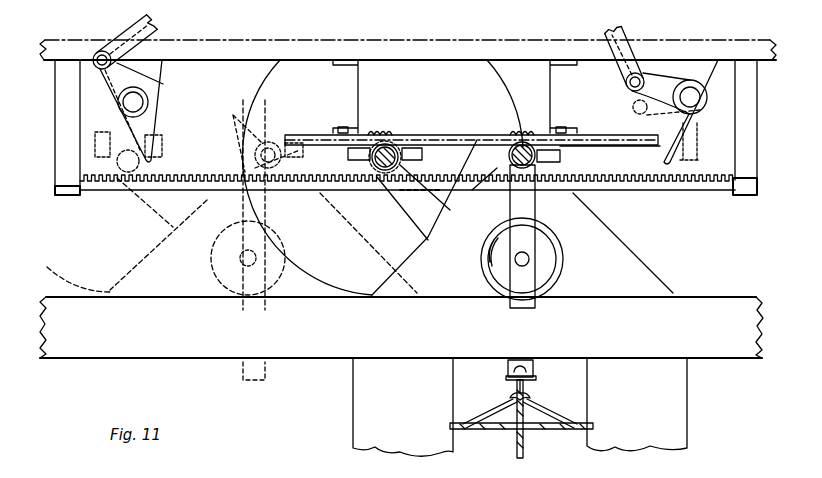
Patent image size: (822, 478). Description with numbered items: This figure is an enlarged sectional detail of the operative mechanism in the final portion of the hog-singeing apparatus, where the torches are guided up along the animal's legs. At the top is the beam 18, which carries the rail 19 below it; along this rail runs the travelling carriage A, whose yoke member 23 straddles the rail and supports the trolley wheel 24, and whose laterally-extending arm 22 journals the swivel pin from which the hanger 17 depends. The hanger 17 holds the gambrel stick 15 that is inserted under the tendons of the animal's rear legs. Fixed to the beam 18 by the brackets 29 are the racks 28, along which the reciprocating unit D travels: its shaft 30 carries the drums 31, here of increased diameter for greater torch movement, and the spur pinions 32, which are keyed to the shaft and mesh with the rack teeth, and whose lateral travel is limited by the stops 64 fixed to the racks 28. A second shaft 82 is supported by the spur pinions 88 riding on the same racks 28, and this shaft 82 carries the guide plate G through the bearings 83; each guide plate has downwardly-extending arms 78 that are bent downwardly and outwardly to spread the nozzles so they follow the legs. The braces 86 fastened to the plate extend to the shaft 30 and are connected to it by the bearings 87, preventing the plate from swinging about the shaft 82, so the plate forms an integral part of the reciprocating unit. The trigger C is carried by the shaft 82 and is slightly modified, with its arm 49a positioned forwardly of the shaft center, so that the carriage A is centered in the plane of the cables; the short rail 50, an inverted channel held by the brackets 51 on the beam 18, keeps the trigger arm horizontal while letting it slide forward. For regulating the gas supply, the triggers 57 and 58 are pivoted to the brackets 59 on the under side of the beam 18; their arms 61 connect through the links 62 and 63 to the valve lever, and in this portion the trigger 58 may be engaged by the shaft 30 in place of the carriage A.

The gambrel stick 15 is at (593, 425).
The hanger 17 is at (560, 410).
The beam 18 is at (408, 40).
The rail 19 is at (401, 327).
The laterally-extending arm 22 is at (534, 380).
The yoke member 23 is at (540, 213).
The trolley wheel 24 is at (555, 258).
The racks 28 is at (622, 187).
The brackets 29 is at (752, 130).
The shaft 30 is at (272, 133).
The drums 31 is at (257, 105).
The spur pinions 32 is at (380, 130).
The arm 49a is at (476, 203).
The short rail 50 is at (598, 135).
The brackets 51 is at (358, 85).
The trigger 57 is at (700, 117).
The trigger 58 is at (143, 125).
The brackets 59 is at (152, 93).
The arms 61 is at (150, 77).
The link 62 is at (620, 33).
The link 63 is at (140, 25).
The stops 64 is at (683, 153).
The downwardly-extending arms 78 is at (520, 407).
The shaft 82 is at (510, 157).
The bearings 83 is at (565, 153).
The braces 86 is at (424, 217).
The bearings 87 is at (373, 180).
The spur pinions 88 is at (518, 133).
The travelling carriage A is at (543, 298).
The trigger C is at (483, 157).
The reciprocating unit D is at (382, 177).
The guide plate G is at (652, 268).